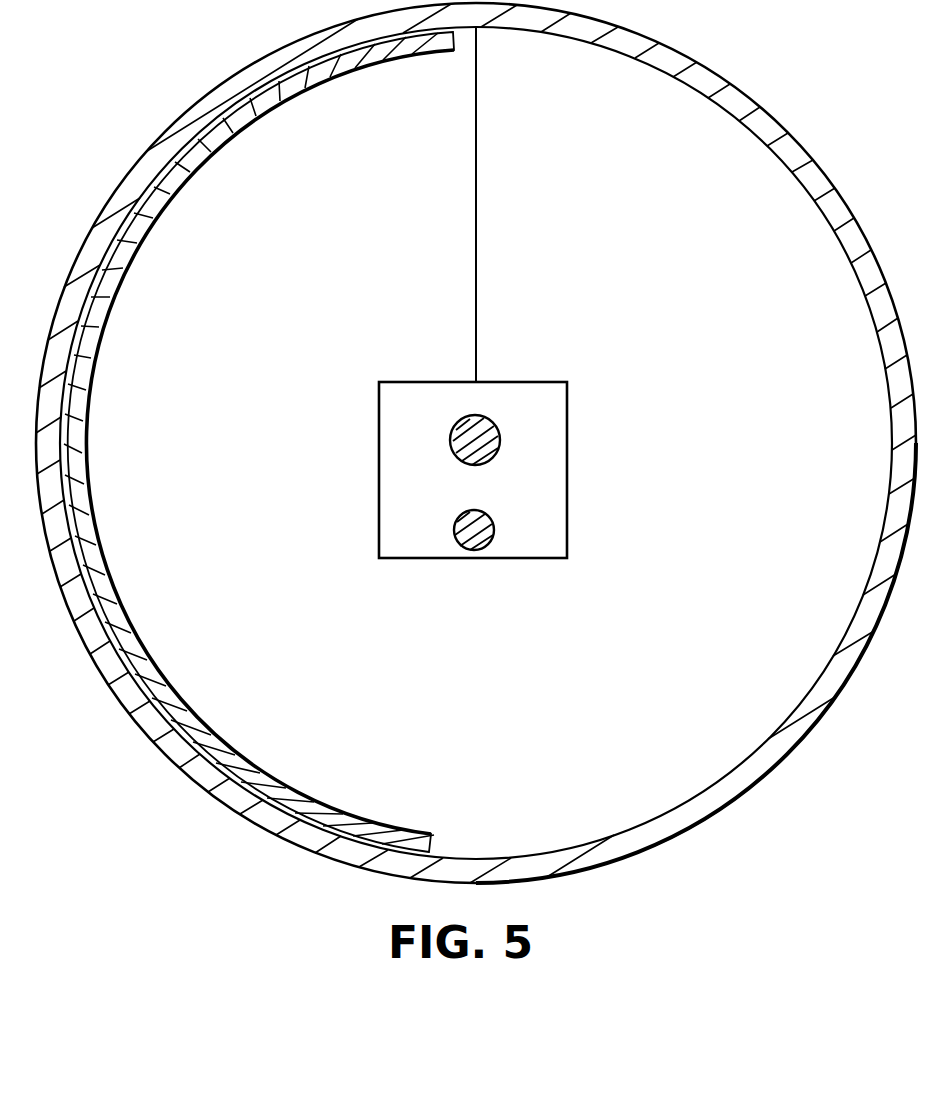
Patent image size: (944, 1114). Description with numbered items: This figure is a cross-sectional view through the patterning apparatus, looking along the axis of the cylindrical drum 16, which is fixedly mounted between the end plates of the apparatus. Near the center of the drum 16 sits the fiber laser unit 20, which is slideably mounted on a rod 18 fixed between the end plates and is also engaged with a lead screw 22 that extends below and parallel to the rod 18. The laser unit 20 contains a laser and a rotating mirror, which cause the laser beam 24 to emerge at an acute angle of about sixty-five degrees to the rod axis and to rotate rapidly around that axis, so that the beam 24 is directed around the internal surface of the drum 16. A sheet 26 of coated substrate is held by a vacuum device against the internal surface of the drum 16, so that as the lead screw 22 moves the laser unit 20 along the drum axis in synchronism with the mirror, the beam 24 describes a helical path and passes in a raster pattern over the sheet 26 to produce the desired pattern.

The cylindrical drum 16 is at (246, 78).
The sheet of coated substrate 26 is at (218, 130).
The laser beam 24 is at (480, 160).
The fiber laser unit 20 is at (412, 400).
The rod 18 is at (486, 428).
The lead screw 22 is at (482, 520).